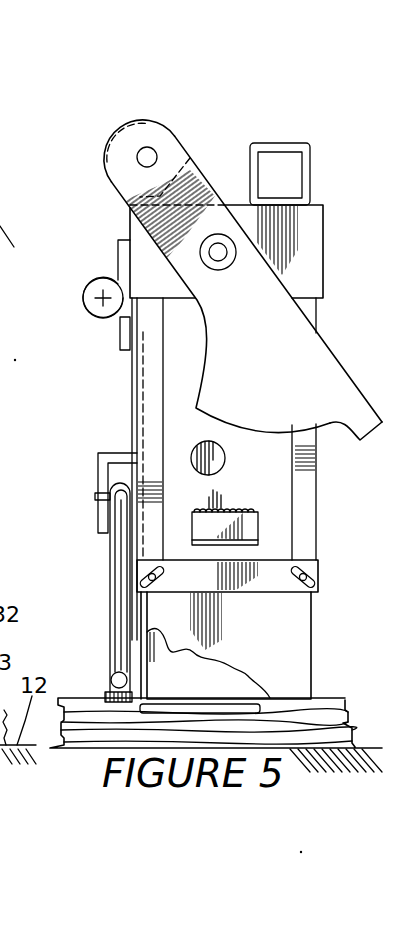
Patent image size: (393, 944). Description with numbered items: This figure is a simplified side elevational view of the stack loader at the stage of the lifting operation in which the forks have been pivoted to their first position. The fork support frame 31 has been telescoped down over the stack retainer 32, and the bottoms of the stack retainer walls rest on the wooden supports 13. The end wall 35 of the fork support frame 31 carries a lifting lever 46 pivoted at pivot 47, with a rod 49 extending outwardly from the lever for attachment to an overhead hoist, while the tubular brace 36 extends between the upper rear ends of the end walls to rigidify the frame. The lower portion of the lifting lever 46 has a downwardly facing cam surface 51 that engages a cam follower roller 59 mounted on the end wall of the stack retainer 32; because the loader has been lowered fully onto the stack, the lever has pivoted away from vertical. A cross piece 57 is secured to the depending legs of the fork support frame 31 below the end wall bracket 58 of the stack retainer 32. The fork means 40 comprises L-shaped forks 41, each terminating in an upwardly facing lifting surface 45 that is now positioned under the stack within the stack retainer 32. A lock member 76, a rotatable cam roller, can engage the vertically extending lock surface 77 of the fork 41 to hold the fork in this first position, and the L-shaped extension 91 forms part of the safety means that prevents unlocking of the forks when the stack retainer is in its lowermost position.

The wooden supports 13 is at (316, 716).
The fork support frame 31 is at (130, 232).
The stack retainer 32 is at (318, 626).
The end wall 35 is at (300, 258).
The tubular brace 36 is at (310, 161).
The fork means 40 is at (126, 418).
The fork 41 is at (127, 565).
The lifting surface 45 is at (204, 699).
The lifting lever 46 is at (188, 178).
The pivot 47 is at (218, 262).
The rod 49 is at (156, 152).
The cam surface 51 is at (332, 424).
The cross piece 57 is at (271, 586).
The end wall bracket 58 is at (223, 546).
The cam follower roller 59 is at (225, 462).
The lock member 76 is at (112, 701).
The lock surface 77 is at (131, 665).
The L-shaped extension 91 is at (112, 594).